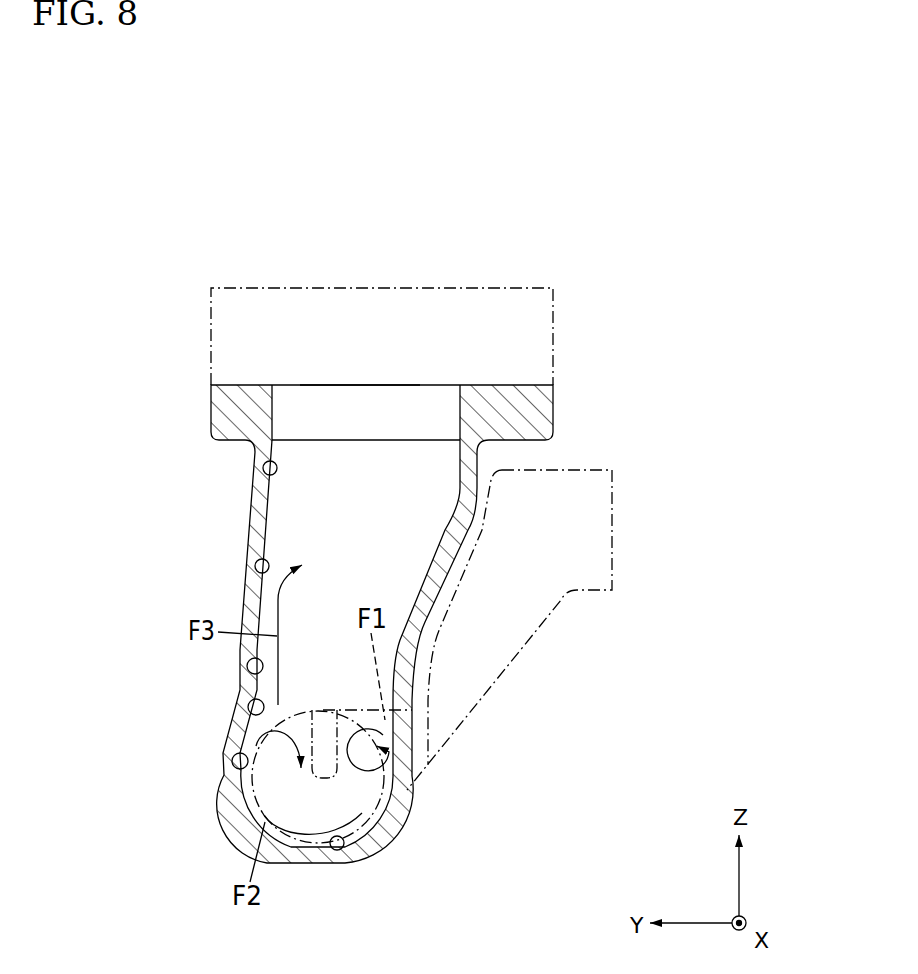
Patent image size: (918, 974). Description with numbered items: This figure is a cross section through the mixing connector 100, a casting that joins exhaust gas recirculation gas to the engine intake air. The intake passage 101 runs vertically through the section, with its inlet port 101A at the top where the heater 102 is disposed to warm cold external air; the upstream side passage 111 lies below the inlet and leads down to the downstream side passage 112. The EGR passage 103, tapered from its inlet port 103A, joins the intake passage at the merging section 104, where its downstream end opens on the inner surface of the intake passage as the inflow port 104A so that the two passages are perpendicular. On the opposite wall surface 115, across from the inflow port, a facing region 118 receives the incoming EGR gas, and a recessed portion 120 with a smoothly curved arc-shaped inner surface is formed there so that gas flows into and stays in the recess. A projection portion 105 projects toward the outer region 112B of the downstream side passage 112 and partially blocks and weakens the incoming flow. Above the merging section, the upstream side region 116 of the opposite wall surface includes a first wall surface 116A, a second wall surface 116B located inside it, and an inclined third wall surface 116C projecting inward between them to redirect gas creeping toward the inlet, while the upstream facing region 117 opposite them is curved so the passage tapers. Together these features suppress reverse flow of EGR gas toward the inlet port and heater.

The mixing connector 100 is at (146, 153).
The intake passage 101 is at (260, 529).
The inlet port 101A is at (362, 385).
The heater 102 is at (553, 322).
The EGR passage 103 is at (499, 661).
The inlet port 103A is at (614, 532).
The merging section 104 is at (420, 790).
The inflow port 104A is at (375, 809).
The projection portion 105 is at (326, 740).
The upstream side passage 111 is at (392, 487).
The downstream side passage 112 is at (367, 812).
The outer region 112B is at (341, 852).
The opposite wall surface 115 is at (234, 699).
The upstream side region 116 is at (273, 506).
The first wall surface 116A is at (247, 653).
The second wall surface 116B is at (263, 466).
The third wall surface 116C is at (255, 563).
The upstream facing region 117 is at (462, 522).
The facing region 118 is at (228, 746).
The recessed portion 120 is at (236, 801).